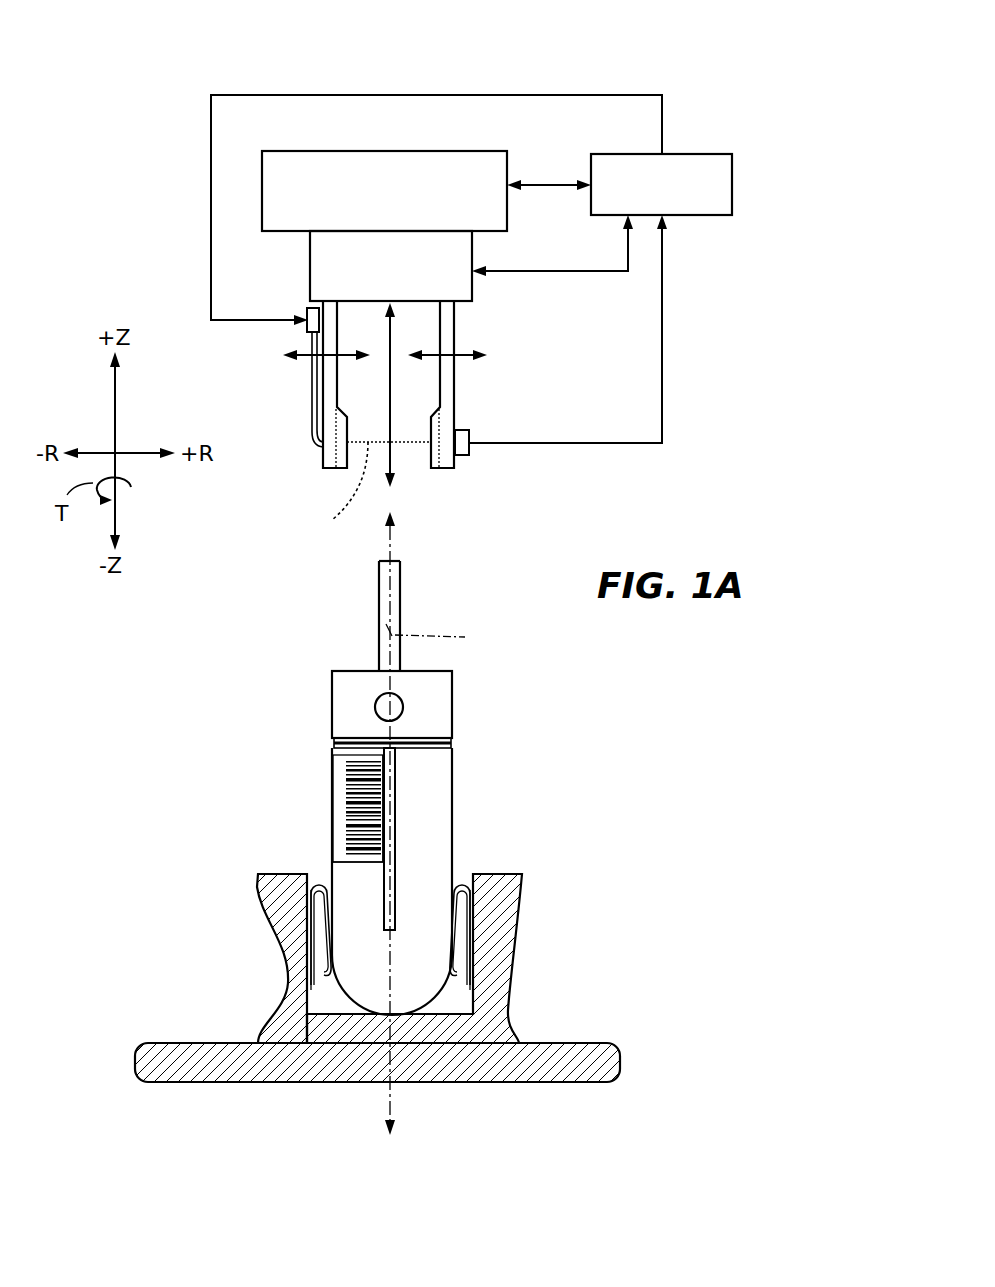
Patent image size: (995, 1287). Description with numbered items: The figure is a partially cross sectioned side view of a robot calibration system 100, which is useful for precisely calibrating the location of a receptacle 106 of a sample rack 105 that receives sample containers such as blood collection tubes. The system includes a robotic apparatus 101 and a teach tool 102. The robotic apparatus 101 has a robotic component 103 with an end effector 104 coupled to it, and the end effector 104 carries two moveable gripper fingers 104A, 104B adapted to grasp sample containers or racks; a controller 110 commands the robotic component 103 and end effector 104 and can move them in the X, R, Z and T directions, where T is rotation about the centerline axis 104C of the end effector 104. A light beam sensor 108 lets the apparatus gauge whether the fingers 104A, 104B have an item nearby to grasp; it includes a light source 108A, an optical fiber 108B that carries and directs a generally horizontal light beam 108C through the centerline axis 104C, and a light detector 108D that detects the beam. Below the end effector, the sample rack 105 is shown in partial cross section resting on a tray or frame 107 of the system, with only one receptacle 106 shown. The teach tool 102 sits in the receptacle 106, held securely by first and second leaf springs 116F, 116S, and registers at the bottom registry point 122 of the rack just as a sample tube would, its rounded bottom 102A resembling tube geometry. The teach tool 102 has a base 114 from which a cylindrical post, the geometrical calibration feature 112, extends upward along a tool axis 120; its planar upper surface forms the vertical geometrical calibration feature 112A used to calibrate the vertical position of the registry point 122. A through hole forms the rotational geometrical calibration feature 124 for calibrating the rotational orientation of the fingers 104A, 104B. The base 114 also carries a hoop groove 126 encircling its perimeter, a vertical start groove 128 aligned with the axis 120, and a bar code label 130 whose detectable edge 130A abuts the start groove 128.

The robot calibration system 100 is at (179, 591).
The robotic apparatus 101 is at (505, 74).
The teach tool 102 is at (318, 705).
The rounded bottom 102A is at (336, 1004).
The robotic component 103 is at (383, 138).
The end effector 104 is at (489, 310).
The first gripper finger 104A is at (325, 457).
The second gripper finger 104B is at (447, 460).
The centerline axis 104C is at (392, 352).
The sample rack 105 is at (252, 860).
The receptacle 106 is at (468, 858).
The frame 107 is at (207, 1043).
The light beam sensor 108 is at (296, 425).
The light source 108A is at (312, 326).
The optical fiber 108B is at (310, 380).
The light beam 108C is at (318, 487).
The light detector 108D is at (463, 430).
The controller 110 is at (682, 140).
The geometrical calibration feature 112 is at (400, 612).
The vertical geometrical calibration feature 112A is at (393, 560).
The base 114 is at (440, 780).
The first leaf spring 116F is at (322, 932).
The second leaf spring 116S is at (453, 933).
The tool axis 120 is at (449, 637).
The bottom registry point 122 is at (388, 1013).
The rotational geometrical calibration feature 124 is at (403, 707).
The hoop groove 126 is at (330, 743).
The start groove 128 is at (395, 827).
The bar code label 130 is at (330, 802).
The detectable edge 130A is at (384, 857).